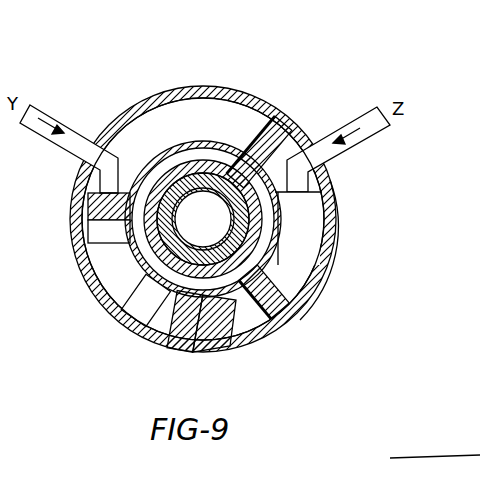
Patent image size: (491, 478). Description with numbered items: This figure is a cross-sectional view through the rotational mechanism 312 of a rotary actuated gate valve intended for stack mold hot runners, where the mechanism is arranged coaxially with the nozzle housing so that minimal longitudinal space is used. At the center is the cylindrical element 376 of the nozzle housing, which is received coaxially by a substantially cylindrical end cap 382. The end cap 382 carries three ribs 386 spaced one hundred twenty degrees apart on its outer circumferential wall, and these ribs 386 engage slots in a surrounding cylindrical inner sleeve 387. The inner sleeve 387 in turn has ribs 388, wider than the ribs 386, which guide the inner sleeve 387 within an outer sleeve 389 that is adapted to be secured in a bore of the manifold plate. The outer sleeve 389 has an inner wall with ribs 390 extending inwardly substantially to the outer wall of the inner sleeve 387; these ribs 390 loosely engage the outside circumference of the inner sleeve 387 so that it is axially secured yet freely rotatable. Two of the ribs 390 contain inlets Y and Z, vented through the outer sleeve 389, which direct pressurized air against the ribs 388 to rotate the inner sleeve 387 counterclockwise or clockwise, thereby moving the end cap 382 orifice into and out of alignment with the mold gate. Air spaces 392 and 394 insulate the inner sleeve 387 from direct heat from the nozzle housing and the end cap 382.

The rotational mechanism 312 is at (155, 133).
The air space 394 is at (185, 113).
The ribs 388 is at (281, 117).
The cylindrical element 376 is at (237, 212).
The outer sleeve 389 is at (330, 257).
The ribs 386 is at (92, 256).
The end cap 382 is at (150, 284).
The inner sleeve 387 is at (120, 280).
The air space 392 is at (147, 325).
The ribs 390 is at (218, 337).